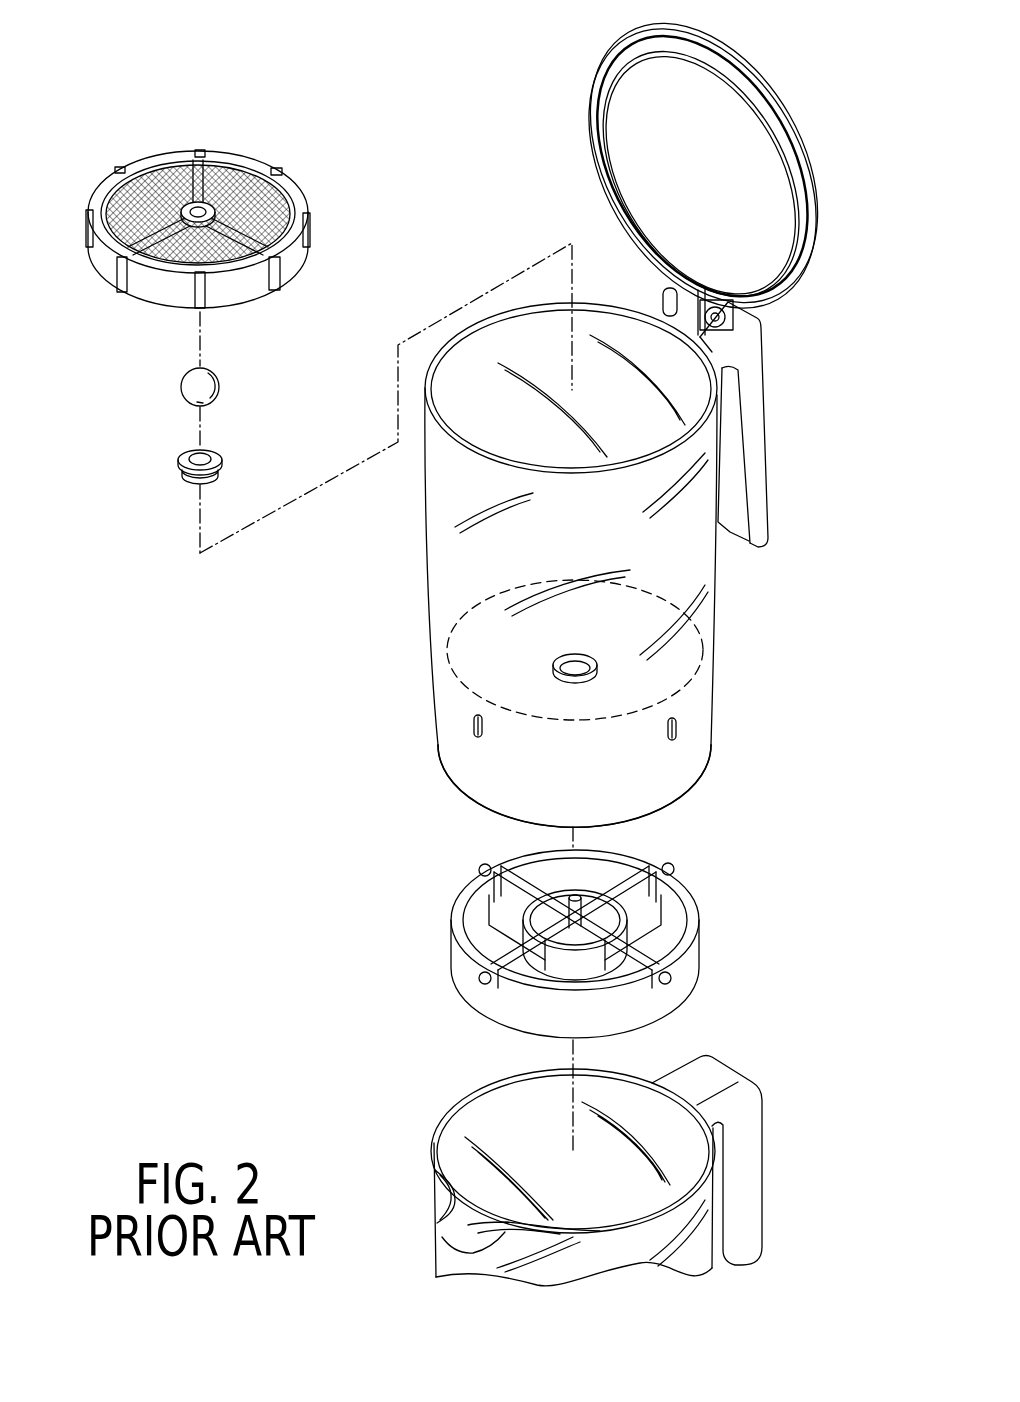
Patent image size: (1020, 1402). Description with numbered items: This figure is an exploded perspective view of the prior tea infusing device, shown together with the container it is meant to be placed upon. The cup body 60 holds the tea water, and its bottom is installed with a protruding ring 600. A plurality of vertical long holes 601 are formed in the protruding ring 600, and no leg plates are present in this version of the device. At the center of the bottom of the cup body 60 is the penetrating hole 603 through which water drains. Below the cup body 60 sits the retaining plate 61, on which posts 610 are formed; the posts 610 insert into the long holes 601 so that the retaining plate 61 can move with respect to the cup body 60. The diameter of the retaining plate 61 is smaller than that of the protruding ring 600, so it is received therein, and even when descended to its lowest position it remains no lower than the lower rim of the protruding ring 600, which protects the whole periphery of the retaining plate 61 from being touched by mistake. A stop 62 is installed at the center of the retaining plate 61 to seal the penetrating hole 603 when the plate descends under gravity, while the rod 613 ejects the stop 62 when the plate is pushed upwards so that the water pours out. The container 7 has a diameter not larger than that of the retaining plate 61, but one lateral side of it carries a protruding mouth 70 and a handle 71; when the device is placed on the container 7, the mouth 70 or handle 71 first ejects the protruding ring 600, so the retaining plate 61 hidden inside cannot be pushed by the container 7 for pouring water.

The stop 62 is at (188, 389).
The cup body 60 is at (700, 572).
The hole 603 is at (470, 694).
The vertical long holes 601 is at (470, 730).
The protruding ring 600 is at (475, 760).
The rod 613 is at (562, 900).
The posts 610 is at (479, 872).
The retaining plate 61 is at (712, 937).
The handle 71 is at (742, 1120).
The container 7 is at (678, 1168).
The protruding mouth 70 is at (463, 1243).